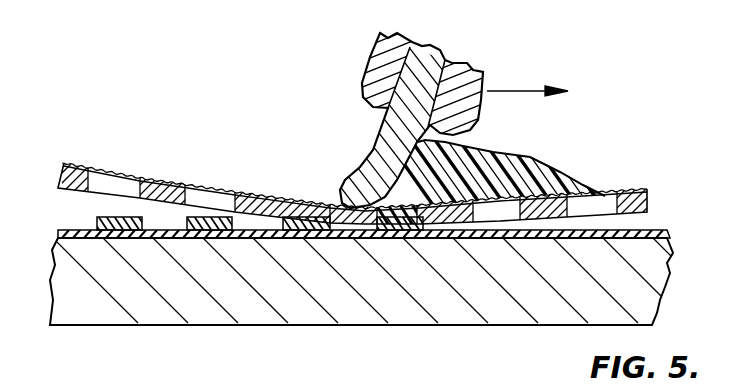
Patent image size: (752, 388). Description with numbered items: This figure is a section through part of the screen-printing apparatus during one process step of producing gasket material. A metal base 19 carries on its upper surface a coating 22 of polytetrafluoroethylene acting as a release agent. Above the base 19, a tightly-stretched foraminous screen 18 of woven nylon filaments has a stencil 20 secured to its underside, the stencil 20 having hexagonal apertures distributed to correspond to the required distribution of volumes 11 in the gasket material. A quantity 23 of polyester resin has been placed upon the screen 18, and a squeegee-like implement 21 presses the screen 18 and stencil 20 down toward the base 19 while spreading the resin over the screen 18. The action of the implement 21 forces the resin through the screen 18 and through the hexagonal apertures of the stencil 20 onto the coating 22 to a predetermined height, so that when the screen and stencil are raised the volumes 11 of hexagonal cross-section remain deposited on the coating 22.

The volumes 11 is at (98, 220).
The foraminous screen 18 is at (119, 172).
The metal base 19 is at (575, 297).
The stencil 20 is at (167, 187).
The squeegee-like implement 21 is at (437, 63).
The coating 22 is at (247, 238).
The quantity of material 23 is at (550, 170).